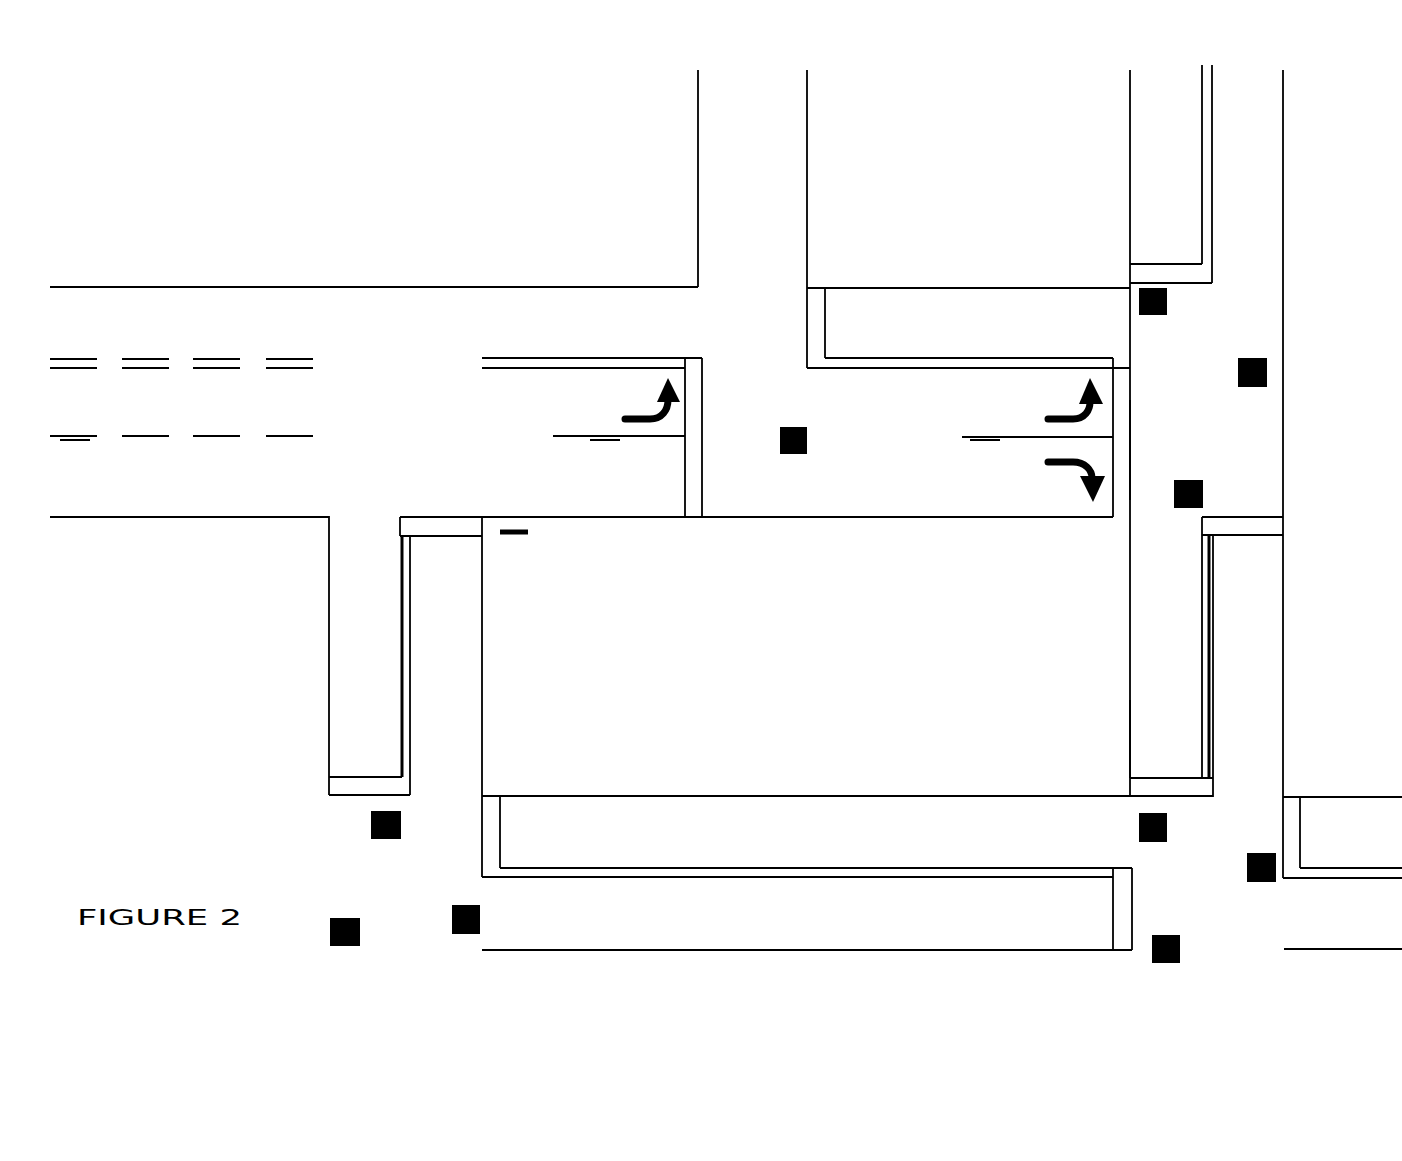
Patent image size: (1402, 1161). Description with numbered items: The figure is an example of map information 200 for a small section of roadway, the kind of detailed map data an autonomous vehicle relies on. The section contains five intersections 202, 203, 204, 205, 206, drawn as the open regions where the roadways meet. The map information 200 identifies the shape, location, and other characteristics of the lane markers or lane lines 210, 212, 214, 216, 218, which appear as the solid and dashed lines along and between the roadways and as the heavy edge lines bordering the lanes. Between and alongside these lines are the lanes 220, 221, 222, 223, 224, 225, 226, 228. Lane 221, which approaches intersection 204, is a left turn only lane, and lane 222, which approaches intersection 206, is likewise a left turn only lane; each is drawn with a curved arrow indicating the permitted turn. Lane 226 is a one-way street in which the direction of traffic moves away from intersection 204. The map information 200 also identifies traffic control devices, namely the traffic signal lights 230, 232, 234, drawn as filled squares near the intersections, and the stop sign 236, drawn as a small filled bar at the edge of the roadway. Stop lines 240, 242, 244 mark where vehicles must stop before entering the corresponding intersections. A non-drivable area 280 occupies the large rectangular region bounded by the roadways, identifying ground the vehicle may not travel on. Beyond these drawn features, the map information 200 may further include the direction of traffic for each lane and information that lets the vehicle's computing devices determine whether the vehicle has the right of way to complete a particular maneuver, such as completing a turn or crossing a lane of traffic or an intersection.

The map information 200 is at (180, 871).
The intersection 202 is at (434, 437).
The intersection 203 is at (784, 495).
The intersection 204 is at (1225, 404).
The intersection 205 is at (1225, 887).
The intersection 206 is at (424, 884).
The lane line 210 is at (586, 432).
The lane line 212 is at (658, 365).
The lane line 214 is at (1030, 360).
The lane line 216 is at (882, 875).
The lane line 218 is at (402, 697).
The lane 220 is at (249, 487).
The lane 221 is at (622, 421).
The lane 222 is at (1000, 422).
The lane 223 is at (1189, 652).
The lane 224 is at (1074, 852).
The lane 225 is at (469, 652).
The lane 226 is at (777, 244).
The lane 228 is at (1269, 242).
The traffic signal light 230 is at (785, 428).
The traffic signal light 232 is at (1128, 286).
The traffic signal light 234 is at (1205, 492).
The stop sign 236 is at (513, 537).
The stop line 240 is at (693, 518).
The stop line 242 is at (1133, 460).
The stop line 244 is at (1165, 778).
The non-drivable area 280 is at (829, 672).